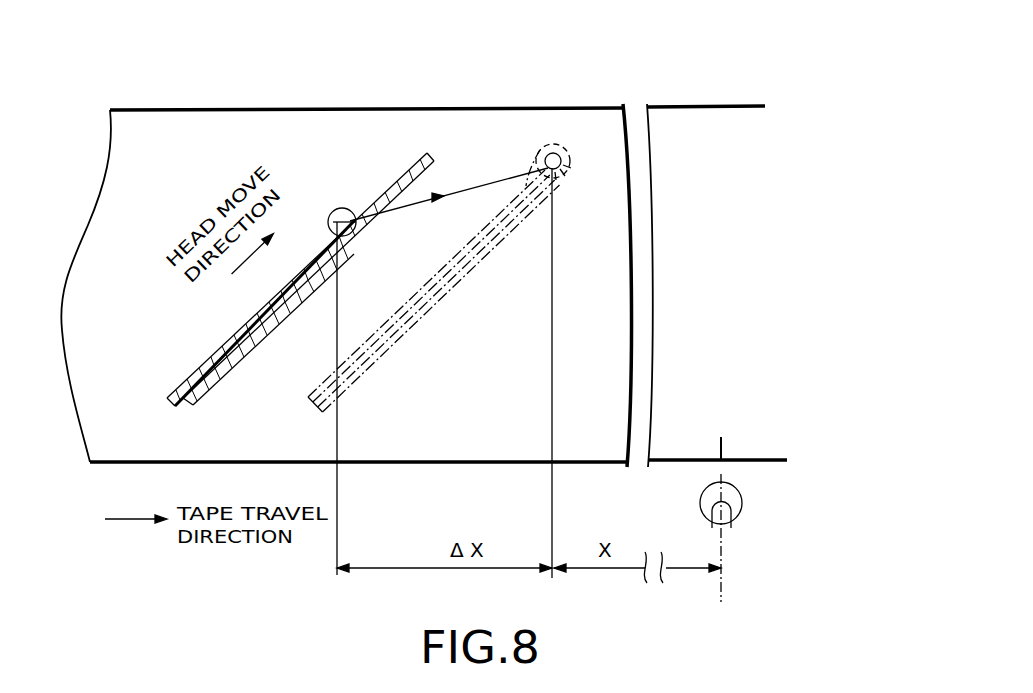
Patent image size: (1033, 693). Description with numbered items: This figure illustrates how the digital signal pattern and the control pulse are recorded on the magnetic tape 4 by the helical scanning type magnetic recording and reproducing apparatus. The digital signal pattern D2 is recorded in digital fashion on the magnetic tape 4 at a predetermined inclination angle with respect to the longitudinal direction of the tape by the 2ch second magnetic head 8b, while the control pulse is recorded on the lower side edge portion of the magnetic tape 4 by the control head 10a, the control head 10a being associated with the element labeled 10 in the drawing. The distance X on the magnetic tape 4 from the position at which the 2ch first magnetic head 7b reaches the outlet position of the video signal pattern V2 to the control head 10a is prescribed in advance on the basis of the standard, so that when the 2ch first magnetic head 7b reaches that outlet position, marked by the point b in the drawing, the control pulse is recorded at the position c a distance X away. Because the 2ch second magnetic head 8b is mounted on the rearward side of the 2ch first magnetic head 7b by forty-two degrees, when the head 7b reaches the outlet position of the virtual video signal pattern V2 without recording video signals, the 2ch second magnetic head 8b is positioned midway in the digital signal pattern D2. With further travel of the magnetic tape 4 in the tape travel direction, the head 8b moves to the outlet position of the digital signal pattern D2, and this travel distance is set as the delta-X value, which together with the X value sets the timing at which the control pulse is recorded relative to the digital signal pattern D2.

The magnetic tape 4 is at (192, 109).
The 2ch first magnetic head 7b is at (546, 142).
The 2ch second magnetic head 8b is at (566, 150).
The head position point b is at (340, 208).
The reference position c is at (721, 440).
The digital signal pattern D2 is at (197, 372).
The video signal pattern V2 is at (508, 242).
The control head 10a is at (742, 500).
The rotary drum 10 is at (820, 547).